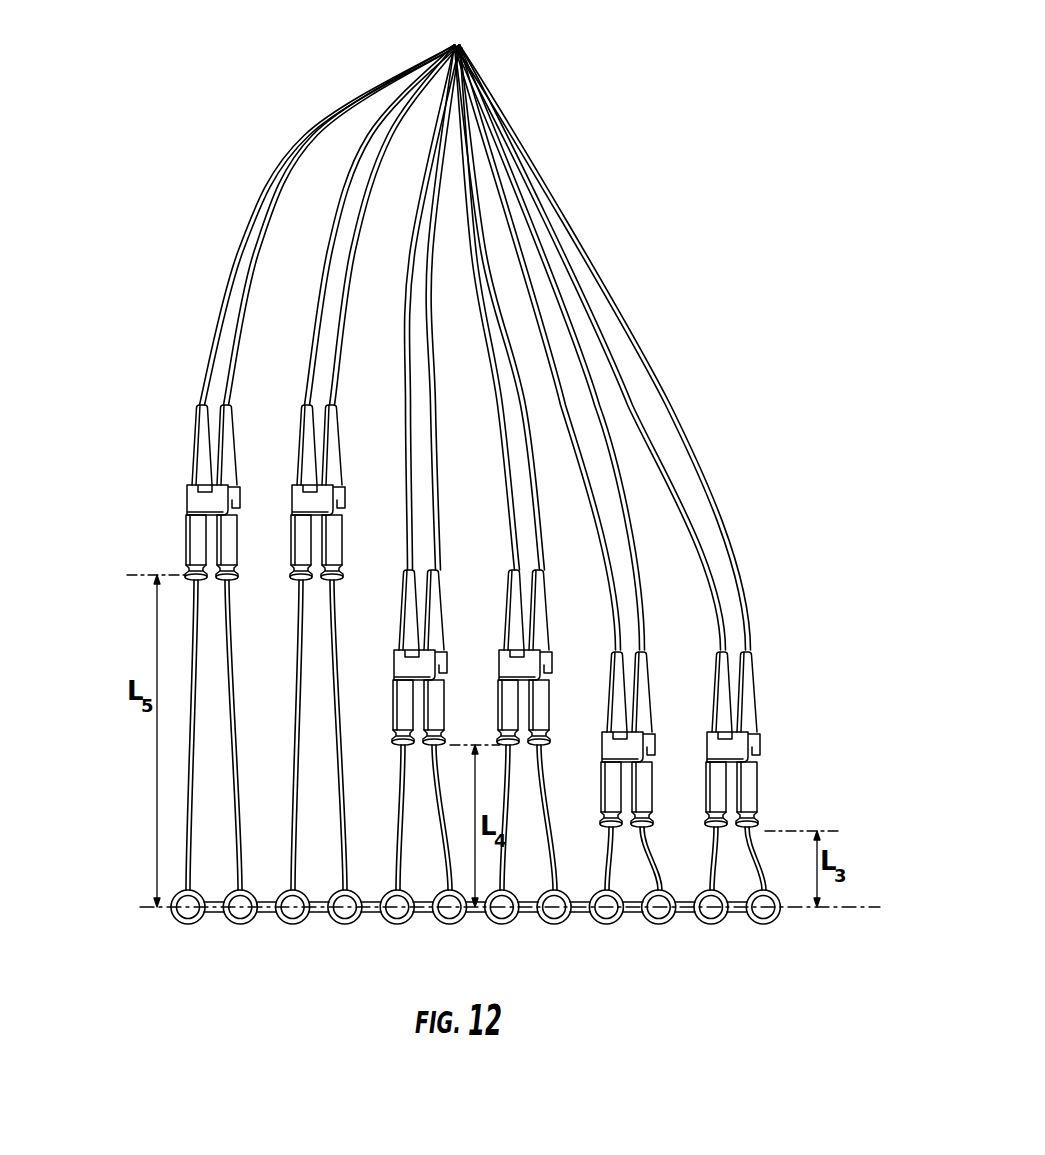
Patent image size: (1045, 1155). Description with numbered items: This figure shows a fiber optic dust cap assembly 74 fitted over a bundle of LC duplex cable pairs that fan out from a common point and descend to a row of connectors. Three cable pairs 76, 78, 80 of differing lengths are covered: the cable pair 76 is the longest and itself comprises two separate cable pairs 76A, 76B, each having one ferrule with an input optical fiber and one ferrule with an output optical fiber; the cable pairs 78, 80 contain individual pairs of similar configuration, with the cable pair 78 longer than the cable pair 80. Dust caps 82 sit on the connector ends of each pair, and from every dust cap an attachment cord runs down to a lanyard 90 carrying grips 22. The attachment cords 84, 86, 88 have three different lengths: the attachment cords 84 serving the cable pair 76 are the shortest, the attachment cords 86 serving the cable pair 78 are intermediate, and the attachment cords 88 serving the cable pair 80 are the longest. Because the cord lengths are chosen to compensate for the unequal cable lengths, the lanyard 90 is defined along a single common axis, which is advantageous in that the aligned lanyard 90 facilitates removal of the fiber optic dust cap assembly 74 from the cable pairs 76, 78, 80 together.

The grips 22 is at (240, 925).
The fiber optic dust cap assembly 74 is at (125, 952).
The cable pair 76 is at (488, 115).
The cable pair 76A is at (735, 545).
The cable pair 76B is at (641, 592).
The cable pair 78 is at (452, 95).
The cable pair 80 is at (346, 102).
The dust caps 82 is at (190, 573).
The attachment cords 84 is at (610, 852).
The attachment cords 86 is at (401, 845).
The attachment cords 88 is at (190, 712).
The lanyard 90 is at (658, 925).